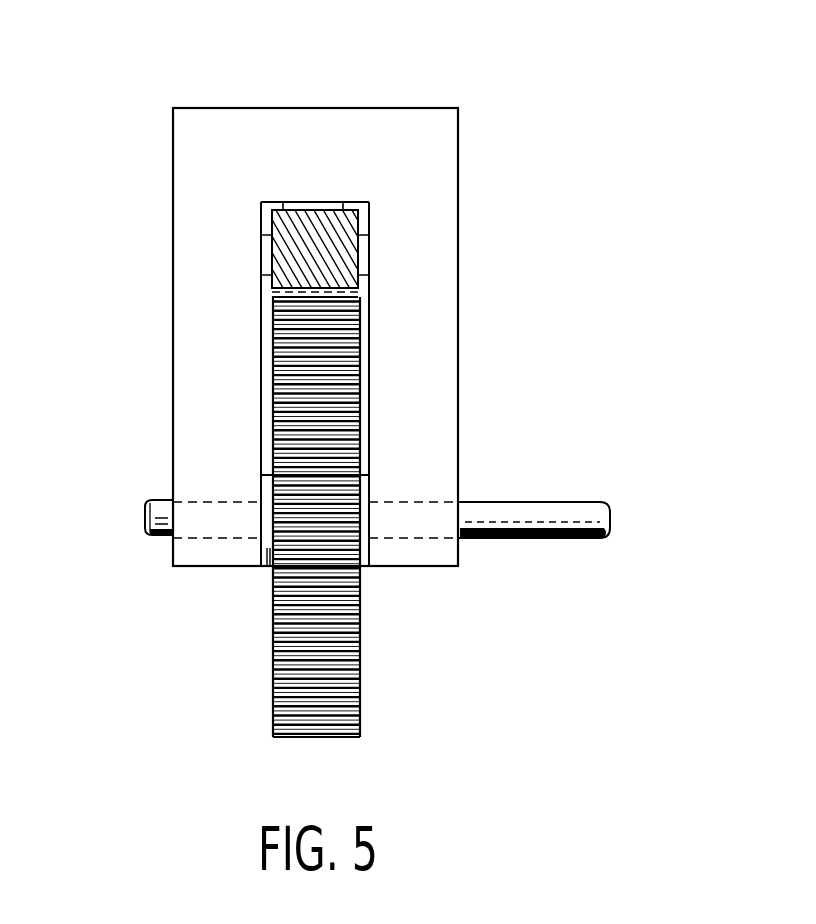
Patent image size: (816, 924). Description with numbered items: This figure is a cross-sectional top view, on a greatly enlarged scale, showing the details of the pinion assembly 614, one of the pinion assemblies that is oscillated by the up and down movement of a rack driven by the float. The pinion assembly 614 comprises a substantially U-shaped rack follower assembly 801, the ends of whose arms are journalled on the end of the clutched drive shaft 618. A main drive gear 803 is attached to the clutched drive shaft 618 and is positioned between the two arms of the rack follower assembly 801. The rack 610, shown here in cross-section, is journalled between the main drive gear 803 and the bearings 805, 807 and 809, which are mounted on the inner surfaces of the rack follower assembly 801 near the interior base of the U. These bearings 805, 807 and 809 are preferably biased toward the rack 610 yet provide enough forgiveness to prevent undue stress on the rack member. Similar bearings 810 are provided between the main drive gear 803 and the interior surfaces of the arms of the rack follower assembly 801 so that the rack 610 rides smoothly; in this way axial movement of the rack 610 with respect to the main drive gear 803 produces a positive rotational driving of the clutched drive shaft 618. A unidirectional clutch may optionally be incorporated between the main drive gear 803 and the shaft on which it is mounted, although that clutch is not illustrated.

The pinion assembly 614 is at (503, 203).
The rack follower assembly 801 is at (183, 352).
The main drive gear 803 is at (345, 620).
The bearing 805 is at (313, 205).
The bearing 807 is at (363, 258).
The bearing 809 is at (267, 260).
The rack 610 is at (267, 222).
The bearing 810 is at (268, 556).
The clutched drive shaft 618 is at (527, 540).